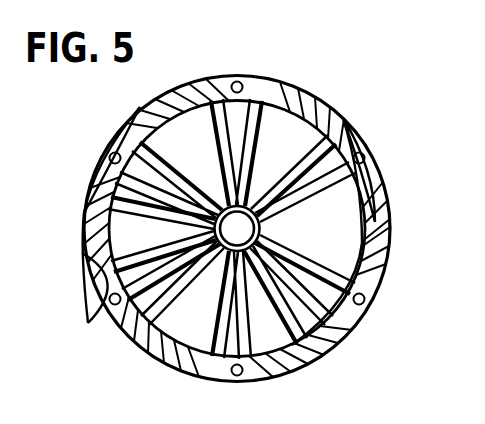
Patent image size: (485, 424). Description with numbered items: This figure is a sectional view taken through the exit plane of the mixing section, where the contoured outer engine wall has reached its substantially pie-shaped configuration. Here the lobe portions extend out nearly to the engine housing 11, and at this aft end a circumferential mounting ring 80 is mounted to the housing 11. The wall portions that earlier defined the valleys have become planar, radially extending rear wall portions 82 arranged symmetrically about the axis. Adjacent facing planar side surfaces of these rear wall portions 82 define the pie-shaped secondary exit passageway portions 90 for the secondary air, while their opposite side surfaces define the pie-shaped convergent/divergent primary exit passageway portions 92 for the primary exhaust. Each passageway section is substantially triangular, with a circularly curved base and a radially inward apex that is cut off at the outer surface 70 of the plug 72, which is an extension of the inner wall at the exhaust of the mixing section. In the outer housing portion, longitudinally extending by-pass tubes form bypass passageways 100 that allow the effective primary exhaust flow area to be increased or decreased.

The engine housing 11 is at (140, 116).
The outer surface of the plug 70 is at (176, 357).
The plug 72 is at (300, 346).
The circumferential mounting ring 80 is at (82, 262).
The rear wall portions 82 is at (100, 318).
The secondary exit passageway portions 90 is at (137, 219).
The primary exit passageway portions 92 is at (138, 178).
The bypass passageways 100 is at (110, 152).